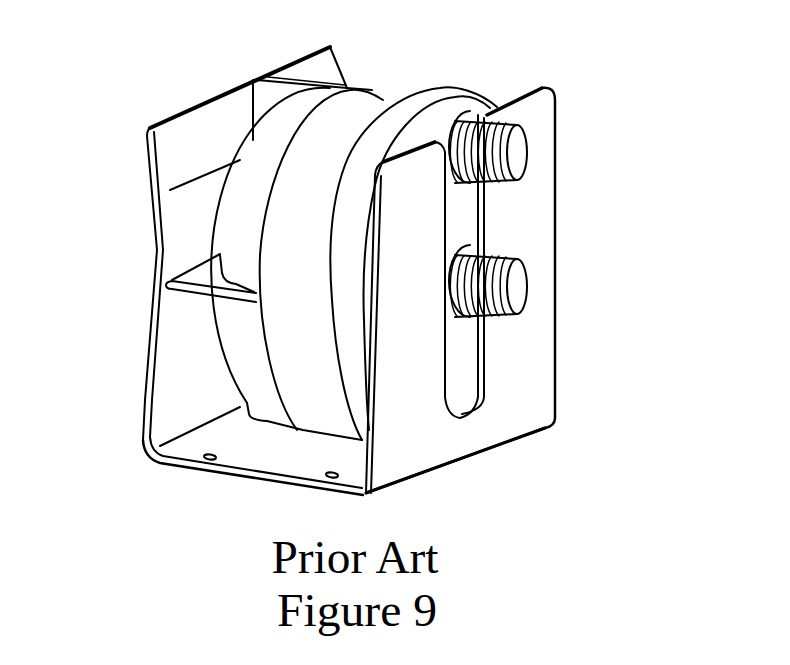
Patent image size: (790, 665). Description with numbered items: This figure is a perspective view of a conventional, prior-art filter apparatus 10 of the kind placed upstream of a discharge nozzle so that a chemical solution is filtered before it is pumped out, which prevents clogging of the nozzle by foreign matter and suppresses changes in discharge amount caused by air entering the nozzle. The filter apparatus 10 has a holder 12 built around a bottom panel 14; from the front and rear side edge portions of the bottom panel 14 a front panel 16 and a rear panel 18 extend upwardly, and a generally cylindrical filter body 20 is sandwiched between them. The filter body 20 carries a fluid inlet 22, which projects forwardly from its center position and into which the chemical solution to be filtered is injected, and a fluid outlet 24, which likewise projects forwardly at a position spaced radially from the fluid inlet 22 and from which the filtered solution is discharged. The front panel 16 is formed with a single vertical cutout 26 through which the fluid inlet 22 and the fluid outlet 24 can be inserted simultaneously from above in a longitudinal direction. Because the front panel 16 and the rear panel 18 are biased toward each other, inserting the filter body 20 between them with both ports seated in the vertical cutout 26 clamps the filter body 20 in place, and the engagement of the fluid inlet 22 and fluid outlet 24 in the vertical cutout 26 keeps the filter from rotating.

The filter apparatus 10 is at (377, 69).
The holder 12 is at (155, 224).
The bottom panel 14 is at (253, 460).
The front panel 16 is at (546, 203).
The rear panel 18 is at (154, 284).
The filter body 20 is at (367, 108).
The fluid inlet 22 is at (507, 288).
The fluid outlet 24 is at (510, 150).
The vertical cutout 26 is at (484, 348).